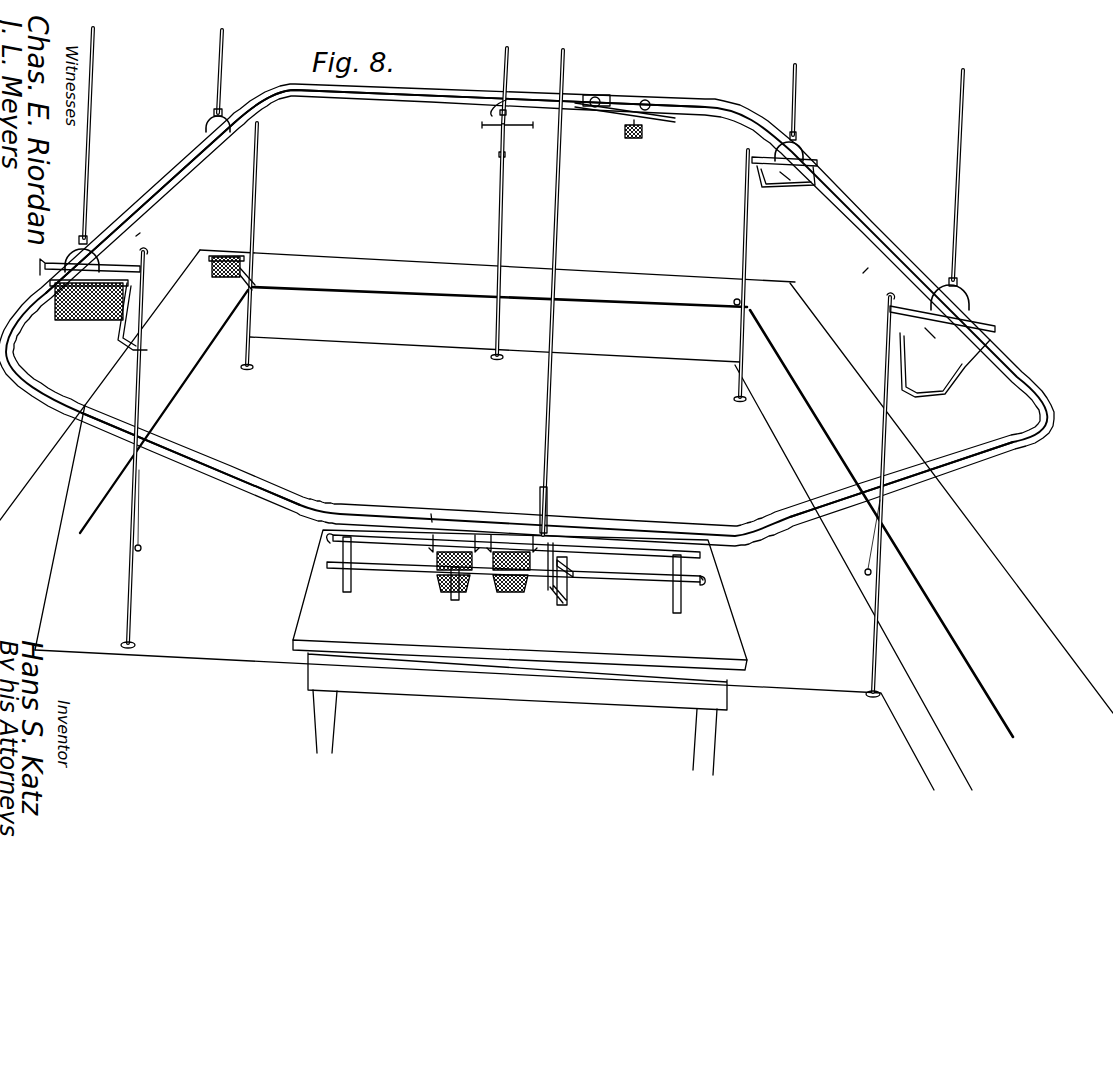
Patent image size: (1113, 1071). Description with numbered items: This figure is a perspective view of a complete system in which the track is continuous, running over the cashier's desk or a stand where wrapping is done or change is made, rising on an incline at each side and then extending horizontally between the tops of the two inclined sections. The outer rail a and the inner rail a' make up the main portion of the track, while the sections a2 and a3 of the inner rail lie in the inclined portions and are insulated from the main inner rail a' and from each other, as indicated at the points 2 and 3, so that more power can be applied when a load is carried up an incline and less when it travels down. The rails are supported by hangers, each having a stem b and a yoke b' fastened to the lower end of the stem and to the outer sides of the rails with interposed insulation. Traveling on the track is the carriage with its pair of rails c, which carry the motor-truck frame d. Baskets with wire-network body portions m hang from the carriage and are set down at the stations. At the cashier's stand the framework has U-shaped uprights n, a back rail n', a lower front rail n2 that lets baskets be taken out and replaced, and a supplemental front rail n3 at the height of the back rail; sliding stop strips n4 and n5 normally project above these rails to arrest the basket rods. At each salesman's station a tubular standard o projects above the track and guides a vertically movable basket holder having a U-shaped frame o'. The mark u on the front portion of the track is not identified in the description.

The outer rail a is at (527, 315).
The inner rail a' is at (375, 191).
The inner rail section a2 is at (946, 455).
The inner rail section a3 is at (222, 468).
The hanger stem b is at (531, 281).
The yoke b' is at (516, 304).
The carriage rails c is at (608, 114).
The motor-truck frame d is at (616, 93).
The basket body portion m is at (642, 133).
The U-shaped uprights n is at (513, 575).
The back rail n' is at (513, 569).
The front rail n2 is at (401, 569).
The supplemental front rail n3 is at (664, 576).
The stop-piece strip n4 is at (55, 308).
The stop-piece strip n5 is at (576, 568).
The tubular standard o is at (508, 410).
The U-shaped frame o' is at (517, 277).
The rail mark u is at (438, 508).
The insulation point 2 is at (868, 270).
The insulation point 3 is at (145, 231).